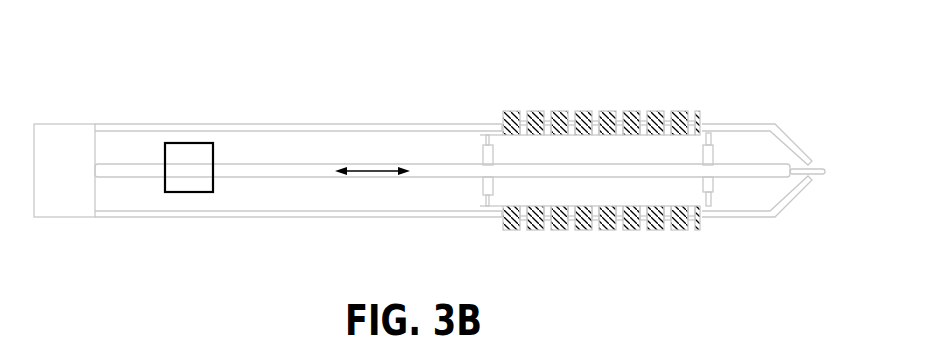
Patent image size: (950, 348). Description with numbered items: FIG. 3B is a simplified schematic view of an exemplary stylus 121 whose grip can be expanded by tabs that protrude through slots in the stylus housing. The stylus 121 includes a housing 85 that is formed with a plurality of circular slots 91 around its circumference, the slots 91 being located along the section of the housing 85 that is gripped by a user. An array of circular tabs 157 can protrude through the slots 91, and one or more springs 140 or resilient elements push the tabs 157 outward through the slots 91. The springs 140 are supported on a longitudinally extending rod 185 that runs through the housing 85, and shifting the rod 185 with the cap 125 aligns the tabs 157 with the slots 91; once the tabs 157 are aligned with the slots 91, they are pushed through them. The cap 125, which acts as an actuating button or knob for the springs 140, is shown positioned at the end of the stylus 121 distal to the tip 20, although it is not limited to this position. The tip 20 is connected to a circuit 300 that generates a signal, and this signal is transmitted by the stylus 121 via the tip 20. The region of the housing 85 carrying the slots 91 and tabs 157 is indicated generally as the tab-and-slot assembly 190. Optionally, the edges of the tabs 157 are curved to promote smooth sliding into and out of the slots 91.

The tip 20 is at (815, 163).
The housing 85 is at (237, 123).
The circular slots 91 is at (521, 109).
The stylus 121 is at (346, 104).
The cap 125 is at (57, 123).
The springs 140 is at (485, 162).
The circular tabs 157 is at (633, 117).
The rod 185 is at (285, 177).
The electrode assembly 190 is at (551, 64).
The circuit 300 is at (192, 192).